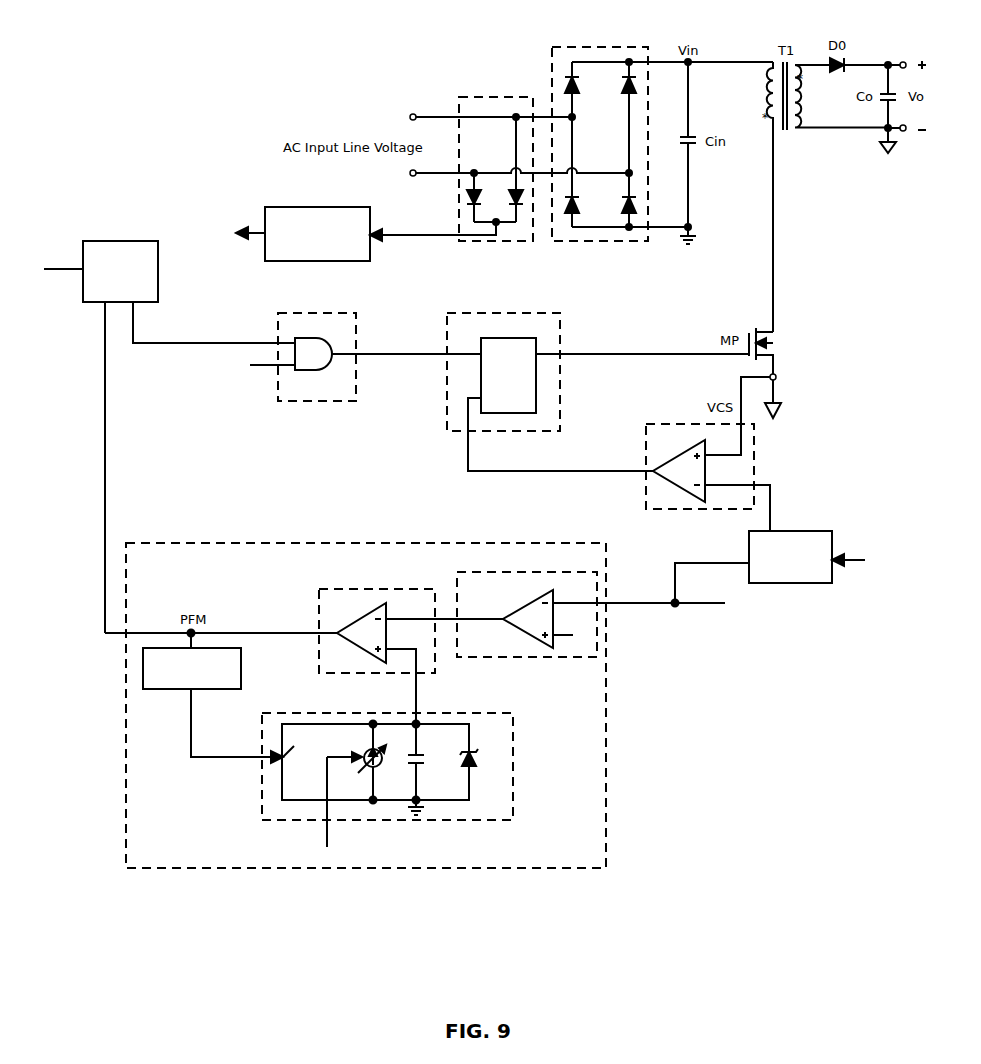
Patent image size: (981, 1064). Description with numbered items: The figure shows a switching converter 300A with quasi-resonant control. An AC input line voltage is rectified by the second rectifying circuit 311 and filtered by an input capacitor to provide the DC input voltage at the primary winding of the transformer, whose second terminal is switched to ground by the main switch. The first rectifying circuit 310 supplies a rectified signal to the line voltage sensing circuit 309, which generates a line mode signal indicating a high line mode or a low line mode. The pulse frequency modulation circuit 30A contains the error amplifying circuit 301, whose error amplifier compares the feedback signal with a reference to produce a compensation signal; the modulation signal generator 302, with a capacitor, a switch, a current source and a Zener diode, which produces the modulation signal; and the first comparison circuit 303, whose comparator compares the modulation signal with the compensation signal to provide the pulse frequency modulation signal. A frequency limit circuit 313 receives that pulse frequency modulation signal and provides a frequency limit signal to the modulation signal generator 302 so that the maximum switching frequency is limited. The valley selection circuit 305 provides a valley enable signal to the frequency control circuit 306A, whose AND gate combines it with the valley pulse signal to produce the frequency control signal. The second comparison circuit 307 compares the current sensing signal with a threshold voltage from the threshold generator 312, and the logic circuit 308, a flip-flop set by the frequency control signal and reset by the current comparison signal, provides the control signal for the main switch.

The switching converter 300A is at (388, 57).
The pulse frequency modulation circuit 30A is at (126, 768).
The error amplifying circuit 301 is at (495, 658).
The modulation signal generator 302 is at (293, 822).
The first comparison circuit 303 is at (332, 675).
The valley selection circuit 305 is at (96, 303).
The frequency control circuit 306A is at (308, 402).
The second comparison circuit 307 is at (668, 510).
The logic circuit 308 is at (465, 432).
The line voltage sensing circuit 309 is at (293, 262).
The first rectifying circuit 310 is at (487, 244).
The second rectifying circuit 311 is at (568, 245).
The threshold generator 312 is at (786, 585).
The frequency limit circuit 313 is at (170, 690).